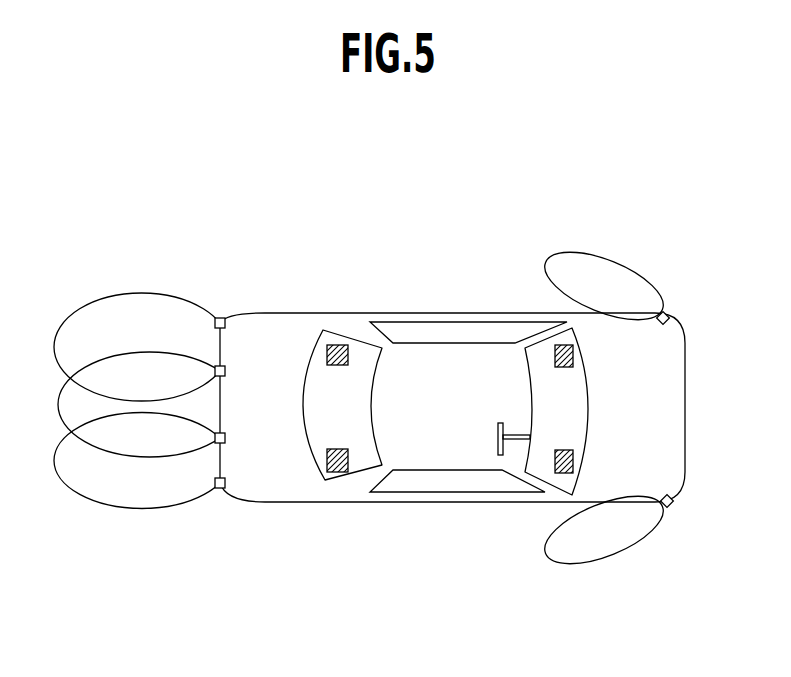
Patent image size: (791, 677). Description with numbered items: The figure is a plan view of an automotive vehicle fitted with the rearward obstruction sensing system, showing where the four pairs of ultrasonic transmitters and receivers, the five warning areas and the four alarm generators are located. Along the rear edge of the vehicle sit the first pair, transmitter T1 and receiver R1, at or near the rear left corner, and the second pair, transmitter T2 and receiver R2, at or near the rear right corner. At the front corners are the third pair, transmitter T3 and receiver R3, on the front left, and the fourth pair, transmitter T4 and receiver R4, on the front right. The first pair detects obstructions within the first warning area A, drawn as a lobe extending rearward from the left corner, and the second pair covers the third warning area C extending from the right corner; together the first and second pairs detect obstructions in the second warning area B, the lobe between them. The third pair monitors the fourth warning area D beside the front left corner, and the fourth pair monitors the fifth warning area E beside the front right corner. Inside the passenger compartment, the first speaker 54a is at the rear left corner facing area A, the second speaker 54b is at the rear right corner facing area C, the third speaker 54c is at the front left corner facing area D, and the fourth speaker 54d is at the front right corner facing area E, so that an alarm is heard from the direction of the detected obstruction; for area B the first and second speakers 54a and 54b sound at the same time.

The first warning area A is at (63, 321).
The second warning area B is at (59, 391).
The third warning area C is at (61, 485).
The fourth warning area D is at (607, 252).
The fifth warning area E is at (600, 566).
The ultrasonic receiver R1 is at (222, 318).
The ultrasonic transmitter T1 is at (225, 371).
The ultrasonic receiver R2 is at (225, 438).
The ultrasonic transmitter T2 is at (218, 488).
The ultrasonic transmitter T3 is at (672, 306).
The ultrasonic receiver R3 is at (696, 282).
The ultrasonic transmitter T4 is at (675, 513).
The ultrasonic receiver R4 is at (700, 529).
The first speaker 54a is at (336, 345).
The second speaker 54b is at (336, 472).
The third speaker 54c is at (573, 358).
The fourth speaker 54d is at (573, 465).